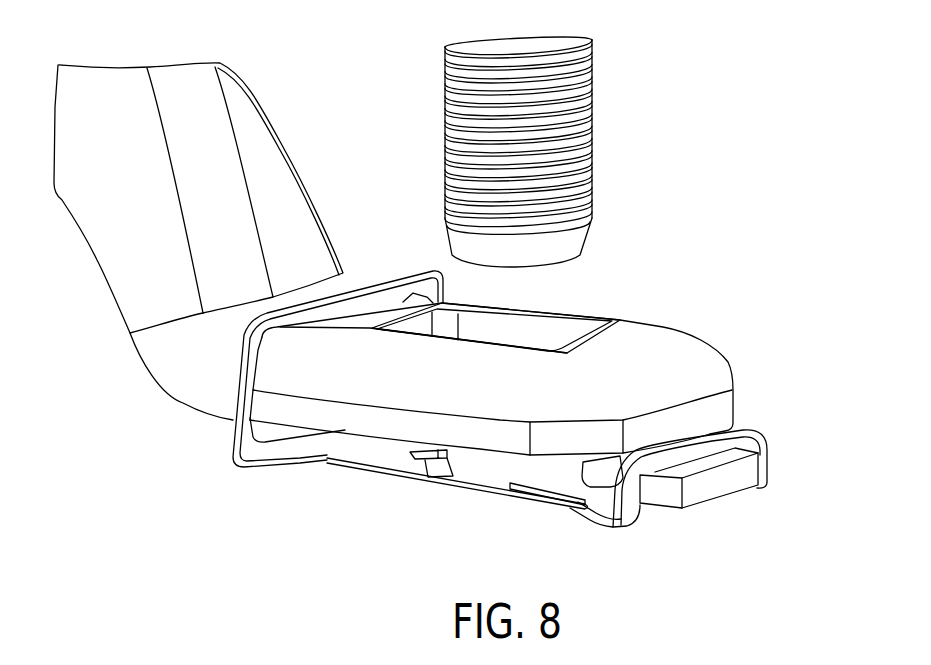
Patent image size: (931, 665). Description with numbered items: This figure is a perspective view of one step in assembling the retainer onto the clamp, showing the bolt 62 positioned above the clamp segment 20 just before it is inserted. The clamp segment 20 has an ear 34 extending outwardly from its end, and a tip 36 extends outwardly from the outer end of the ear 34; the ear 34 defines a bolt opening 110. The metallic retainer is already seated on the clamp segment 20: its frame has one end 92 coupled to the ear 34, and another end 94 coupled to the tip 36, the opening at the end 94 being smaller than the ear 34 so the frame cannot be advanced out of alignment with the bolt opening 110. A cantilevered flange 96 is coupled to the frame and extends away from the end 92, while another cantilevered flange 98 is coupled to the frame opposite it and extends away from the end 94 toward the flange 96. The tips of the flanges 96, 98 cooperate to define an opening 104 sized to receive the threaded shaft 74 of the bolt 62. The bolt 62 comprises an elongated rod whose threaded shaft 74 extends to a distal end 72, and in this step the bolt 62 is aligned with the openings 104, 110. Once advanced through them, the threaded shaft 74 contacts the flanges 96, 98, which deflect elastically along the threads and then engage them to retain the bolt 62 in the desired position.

The clamp segment 20 is at (283, 150).
The bolt 62 is at (558, 136).
The threaded shaft 74 is at (578, 148).
The distal end 72 is at (575, 245).
The bolt opening 110 is at (574, 333).
The ear 34 is at (512, 370).
The end of the frame 92 is at (237, 430).
The opening 104 is at (476, 486).
The cantilevered flange 96 is at (417, 463).
The cantilevered flange 98 is at (547, 488).
The end of the frame 94 is at (760, 440).
The tip 36 is at (752, 485).